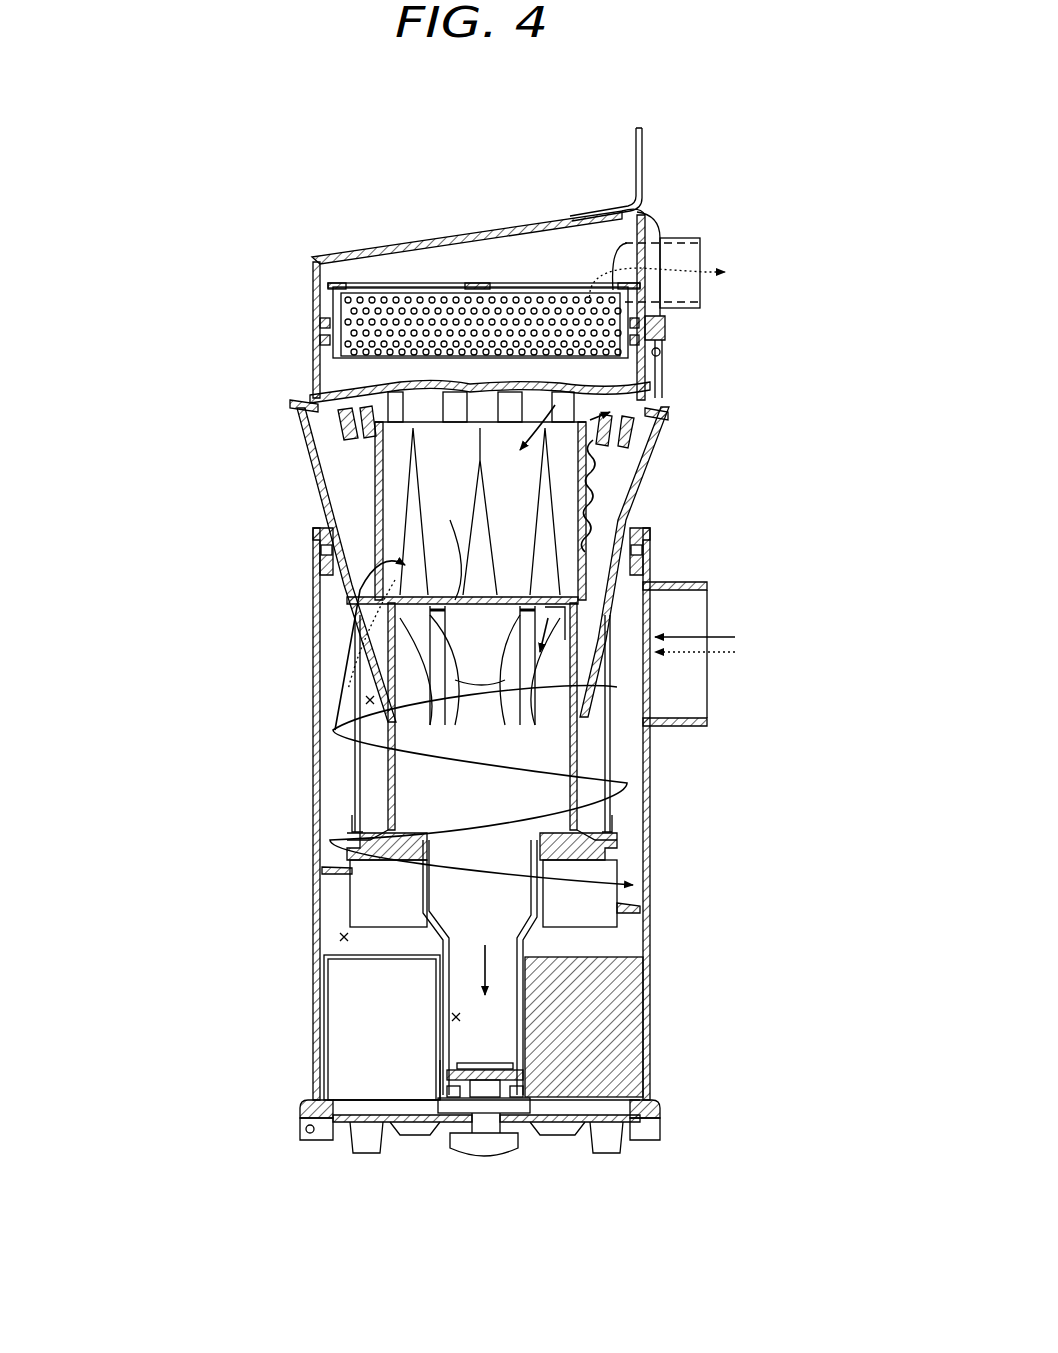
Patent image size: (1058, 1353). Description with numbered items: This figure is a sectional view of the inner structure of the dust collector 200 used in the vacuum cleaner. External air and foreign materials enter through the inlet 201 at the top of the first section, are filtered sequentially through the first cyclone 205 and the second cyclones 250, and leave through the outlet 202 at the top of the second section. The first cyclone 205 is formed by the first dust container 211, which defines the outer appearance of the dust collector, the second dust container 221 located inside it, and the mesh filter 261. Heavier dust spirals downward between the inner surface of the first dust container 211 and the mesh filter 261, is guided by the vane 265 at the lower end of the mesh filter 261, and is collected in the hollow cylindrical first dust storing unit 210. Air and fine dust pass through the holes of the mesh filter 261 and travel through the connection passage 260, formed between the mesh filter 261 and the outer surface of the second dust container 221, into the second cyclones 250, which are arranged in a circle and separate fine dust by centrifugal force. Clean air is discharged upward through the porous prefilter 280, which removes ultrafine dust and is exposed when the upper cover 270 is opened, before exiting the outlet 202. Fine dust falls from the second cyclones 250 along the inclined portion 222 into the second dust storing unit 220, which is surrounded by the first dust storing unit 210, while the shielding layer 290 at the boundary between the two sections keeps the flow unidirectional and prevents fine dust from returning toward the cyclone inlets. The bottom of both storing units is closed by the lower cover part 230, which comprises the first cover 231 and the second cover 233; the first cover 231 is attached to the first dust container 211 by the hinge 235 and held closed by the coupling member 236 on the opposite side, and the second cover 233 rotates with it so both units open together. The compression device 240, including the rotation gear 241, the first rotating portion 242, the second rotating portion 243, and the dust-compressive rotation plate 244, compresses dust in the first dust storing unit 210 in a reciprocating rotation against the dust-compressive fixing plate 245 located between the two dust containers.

The dust collector 200 is at (316, 156).
The inlet 201 is at (683, 580).
The outlet 202 is at (680, 240).
The first cyclone 205 is at (310, 848).
The first dust storing unit 210 is at (342, 937).
The first dust container 211 is at (318, 1045).
The second dust storing unit 220 is at (452, 1017).
The second dust container 221 is at (440, 1058).
The inclined portion 222 is at (560, 718).
The lower cover part 230 is at (422, 1242).
The first cover 231 is at (400, 1125).
The second cover 233 is at (437, 1125).
The hinge 235 is at (303, 1128).
The coupling member 236 is at (658, 1128).
The compression device 240 is at (585, 1242).
The rotation gear 241 is at (488, 1145).
The first rotating portion 242 is at (515, 1100).
The second rotating portion 243 is at (535, 1090).
The dust-compressive rotation plate 244 is at (452, 1098).
The dust-compressive fixing plate 245 is at (620, 1020).
The second cyclones 250 is at (305, 450).
The connection passage 260 is at (368, 700).
The mesh filter 261 is at (356, 758).
The vane 265 is at (640, 906).
The upper cover 270 is at (313, 266).
The prefilter 280 is at (340, 316).
The shielding layer 290 is at (383, 548).